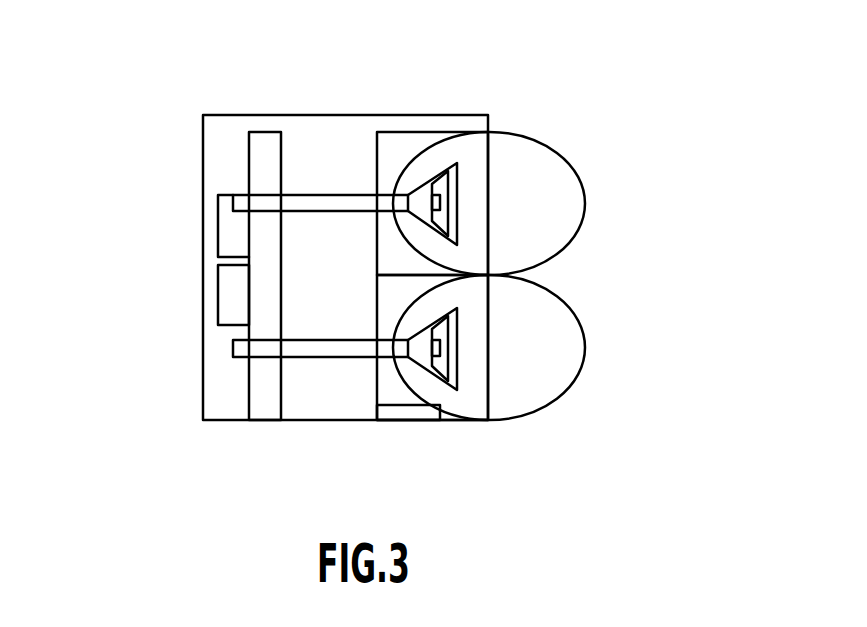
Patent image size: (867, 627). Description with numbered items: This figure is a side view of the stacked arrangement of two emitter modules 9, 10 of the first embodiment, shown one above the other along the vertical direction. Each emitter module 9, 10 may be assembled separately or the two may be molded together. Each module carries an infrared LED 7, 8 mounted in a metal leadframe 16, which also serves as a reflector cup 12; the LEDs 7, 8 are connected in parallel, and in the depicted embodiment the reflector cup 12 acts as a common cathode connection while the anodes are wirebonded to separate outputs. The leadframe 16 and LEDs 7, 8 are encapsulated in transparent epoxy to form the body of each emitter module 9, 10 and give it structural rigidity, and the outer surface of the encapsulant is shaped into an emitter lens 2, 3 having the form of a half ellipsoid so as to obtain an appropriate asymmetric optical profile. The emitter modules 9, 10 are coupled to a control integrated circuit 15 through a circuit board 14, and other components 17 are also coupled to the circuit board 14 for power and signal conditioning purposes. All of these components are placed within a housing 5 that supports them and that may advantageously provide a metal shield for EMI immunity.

The emitter lens 2 is at (558, 148).
The emitter lens 3 is at (563, 398).
The housing 5 is at (175, 439).
The infrared LED 7 is at (442, 200).
The infrared LED 8 is at (442, 345).
The emitter module 9 is at (400, 147).
The emitter module 10 is at (390, 387).
The reflector cup 12 is at (457, 385).
The circuit board 14 is at (262, 157).
The control integrated circuit 15 is at (296, 260).
The metal leadframe 16 is at (337, 195).
The other components 17 is at (225, 298).